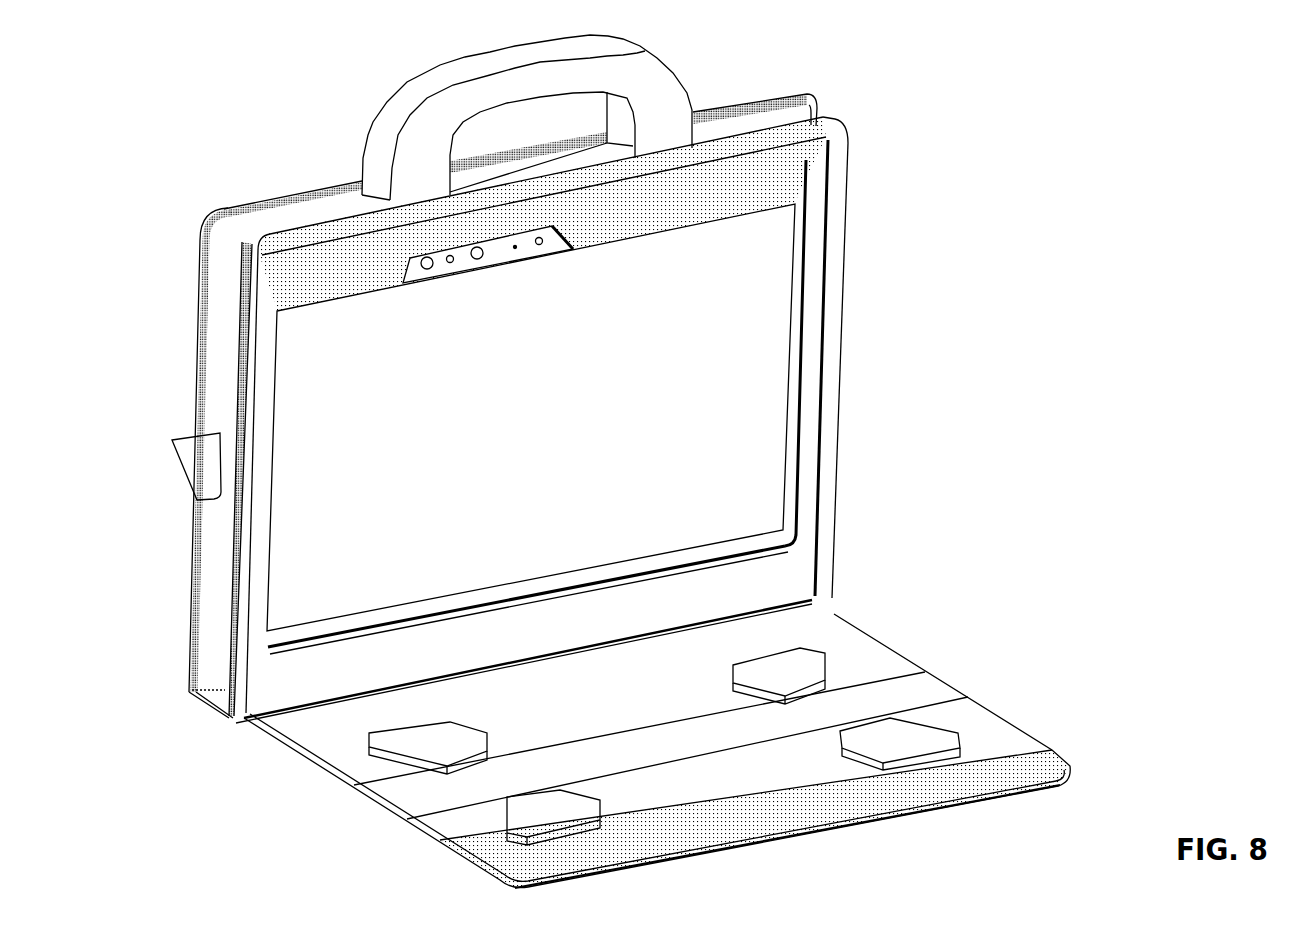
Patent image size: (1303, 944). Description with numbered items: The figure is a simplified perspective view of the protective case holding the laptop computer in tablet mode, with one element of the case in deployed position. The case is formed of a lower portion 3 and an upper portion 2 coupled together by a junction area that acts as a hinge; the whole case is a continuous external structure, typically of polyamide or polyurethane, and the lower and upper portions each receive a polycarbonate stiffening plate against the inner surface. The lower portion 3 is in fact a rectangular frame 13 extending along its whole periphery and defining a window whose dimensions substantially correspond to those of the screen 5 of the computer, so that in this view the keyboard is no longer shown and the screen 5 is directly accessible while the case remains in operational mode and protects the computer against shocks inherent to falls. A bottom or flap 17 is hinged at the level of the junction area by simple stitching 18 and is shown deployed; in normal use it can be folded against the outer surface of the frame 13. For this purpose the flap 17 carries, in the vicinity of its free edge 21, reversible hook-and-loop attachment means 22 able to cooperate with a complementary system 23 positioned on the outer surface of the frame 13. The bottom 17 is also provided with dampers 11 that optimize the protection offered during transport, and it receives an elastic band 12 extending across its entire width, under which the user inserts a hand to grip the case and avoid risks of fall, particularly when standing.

The upper portion 2 is at (218, 213).
The lower portion 3 is at (836, 465).
The screen 5 is at (307, 374).
The dampers 11 is at (793, 670).
The elastic band 12 is at (933, 690).
The rectangular frame 13 is at (838, 298).
The bottom or flap 17 is at (977, 723).
The stitching 18 is at (327, 697).
The free edge 21 is at (857, 820).
The reversible attachment means 22 is at (1035, 767).
The complementary system 23 is at (803, 165).